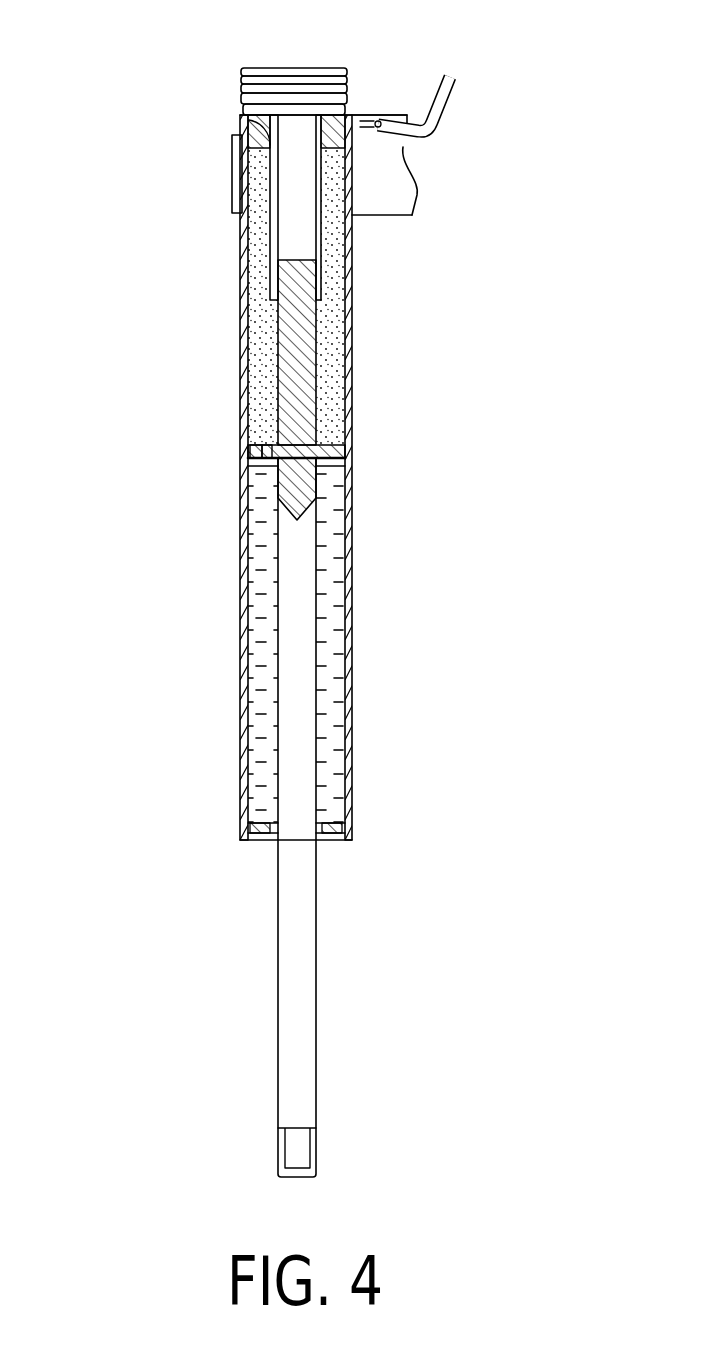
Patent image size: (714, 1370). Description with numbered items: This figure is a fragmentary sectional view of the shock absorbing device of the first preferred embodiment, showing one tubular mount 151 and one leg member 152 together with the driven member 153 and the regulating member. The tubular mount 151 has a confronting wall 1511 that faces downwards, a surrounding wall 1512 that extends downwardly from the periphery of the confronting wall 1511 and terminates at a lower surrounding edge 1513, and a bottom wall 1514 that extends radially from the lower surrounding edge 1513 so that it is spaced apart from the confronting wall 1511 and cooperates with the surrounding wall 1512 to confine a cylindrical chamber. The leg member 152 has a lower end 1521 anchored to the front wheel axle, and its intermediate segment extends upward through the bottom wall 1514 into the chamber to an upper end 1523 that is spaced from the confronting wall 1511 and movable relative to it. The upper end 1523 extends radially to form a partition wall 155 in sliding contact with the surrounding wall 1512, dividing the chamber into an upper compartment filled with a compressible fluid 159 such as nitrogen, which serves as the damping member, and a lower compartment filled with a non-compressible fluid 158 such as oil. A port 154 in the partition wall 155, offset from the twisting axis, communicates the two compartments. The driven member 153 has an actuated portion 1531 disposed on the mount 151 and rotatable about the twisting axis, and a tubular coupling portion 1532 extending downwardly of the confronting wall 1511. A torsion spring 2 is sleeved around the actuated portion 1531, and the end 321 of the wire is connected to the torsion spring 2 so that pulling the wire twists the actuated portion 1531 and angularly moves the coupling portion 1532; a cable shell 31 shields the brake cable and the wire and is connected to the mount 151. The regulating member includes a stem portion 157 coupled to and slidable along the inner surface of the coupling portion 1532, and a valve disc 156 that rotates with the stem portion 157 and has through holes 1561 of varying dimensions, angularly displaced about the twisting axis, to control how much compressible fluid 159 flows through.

The torsion spring 2 is at (257, 73).
The driven member 153 is at (312, 70).
The actuated portion 1531 is at (348, 85).
The cable shell 31 is at (443, 107).
The end of the wire 321 is at (430, 148).
The confronting wall 1511 is at (257, 163).
The compressible fluid 159 is at (263, 252).
The surrounding wall 1512 is at (242, 302).
The tubular mount 151 is at (272, 477).
The coupling portion 1532 is at (300, 228).
The stem portion 157 is at (384, 408).
The port 154 is at (295, 402).
The through holes 1561 is at (270, 444).
The valve disc 156 is at (252, 450).
The partition wall 155 is at (256, 470).
The upper end 1523 is at (297, 498).
The non-compressible fluid 158 is at (257, 673).
The lower surrounding edge 1513 is at (242, 838).
The bottom wall 1514 is at (270, 842).
The leg member 152 is at (374, 817).
The lower end 1521 is at (315, 1143).